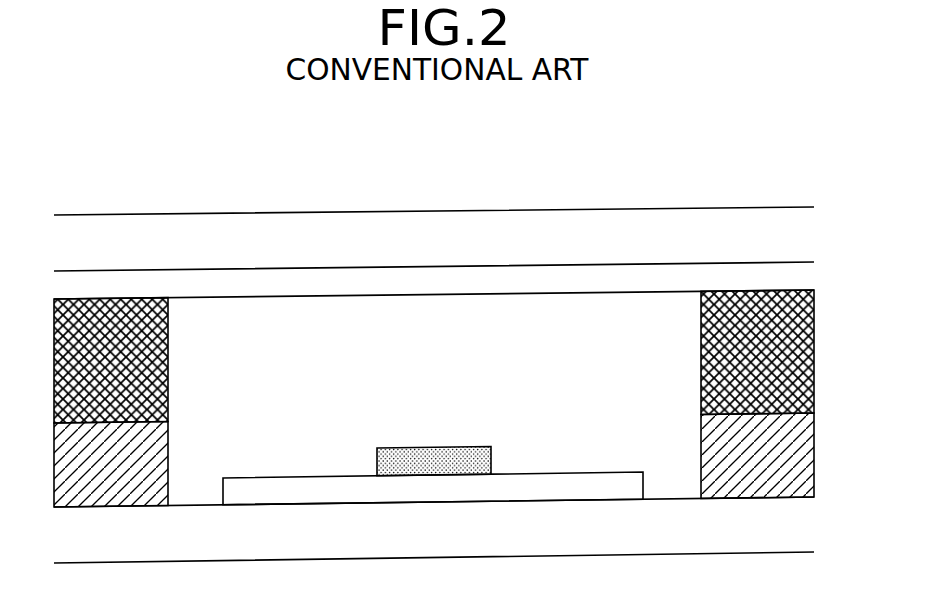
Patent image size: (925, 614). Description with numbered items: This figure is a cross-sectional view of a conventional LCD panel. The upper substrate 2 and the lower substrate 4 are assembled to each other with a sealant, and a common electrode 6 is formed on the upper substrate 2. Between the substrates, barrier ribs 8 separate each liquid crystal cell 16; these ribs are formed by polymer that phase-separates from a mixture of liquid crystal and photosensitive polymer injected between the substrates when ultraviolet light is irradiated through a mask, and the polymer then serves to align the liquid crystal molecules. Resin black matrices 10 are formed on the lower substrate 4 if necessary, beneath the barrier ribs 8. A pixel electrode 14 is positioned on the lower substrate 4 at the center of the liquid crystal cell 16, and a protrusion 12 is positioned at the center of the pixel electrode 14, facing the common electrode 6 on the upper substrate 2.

The upper substrate 2 is at (808, 234).
The lower substrate 4 is at (808, 528).
The common electrode 6 is at (808, 279).
The barrier ribs 8 is at (806, 341).
The resin black matrices 10 is at (806, 451).
The protrusion 12 is at (442, 447).
The pixel electrode 14 is at (304, 477).
The liquid crystal cell 16 is at (338, 313).